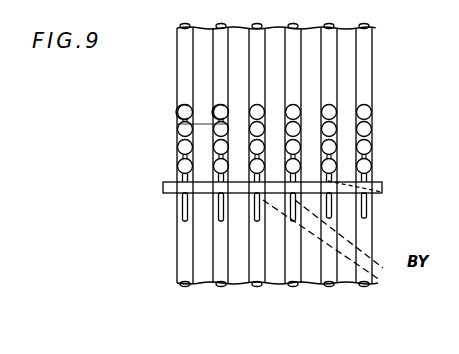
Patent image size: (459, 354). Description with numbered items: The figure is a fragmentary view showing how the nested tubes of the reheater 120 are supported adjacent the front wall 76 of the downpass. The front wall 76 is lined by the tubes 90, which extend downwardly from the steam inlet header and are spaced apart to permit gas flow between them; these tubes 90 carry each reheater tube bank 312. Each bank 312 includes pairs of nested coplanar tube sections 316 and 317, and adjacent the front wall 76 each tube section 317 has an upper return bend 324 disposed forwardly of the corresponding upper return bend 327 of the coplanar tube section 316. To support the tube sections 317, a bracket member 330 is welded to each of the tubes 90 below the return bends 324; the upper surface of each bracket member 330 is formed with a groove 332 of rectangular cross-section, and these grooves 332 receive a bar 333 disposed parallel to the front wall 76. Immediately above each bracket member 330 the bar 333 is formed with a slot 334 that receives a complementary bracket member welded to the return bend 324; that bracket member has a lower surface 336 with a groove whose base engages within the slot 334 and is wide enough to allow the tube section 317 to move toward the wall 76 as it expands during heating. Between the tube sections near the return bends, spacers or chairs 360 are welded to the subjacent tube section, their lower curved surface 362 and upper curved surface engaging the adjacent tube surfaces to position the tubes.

The front wall 76 is at (208, 42).
The tubes 90 is at (220, 60).
The tube section 317 is at (218, 113).
The reheater 120 is at (217, 117).
The spacer or chair 360 is at (221, 123).
The reheater tube bank 312 is at (184, 134).
The tube section 316 is at (217, 137).
The lower curved surface 362 is at (183, 168).
The upper return bend 324 is at (335, 119).
The upper return bend 327 is at (331, 137).
The bar 333 is at (172, 194).
The slot 334 is at (381, 190).
The lower surface 336 is at (182, 182).
The bracket member 330 is at (330, 215).
The groove 332 is at (377, 277).